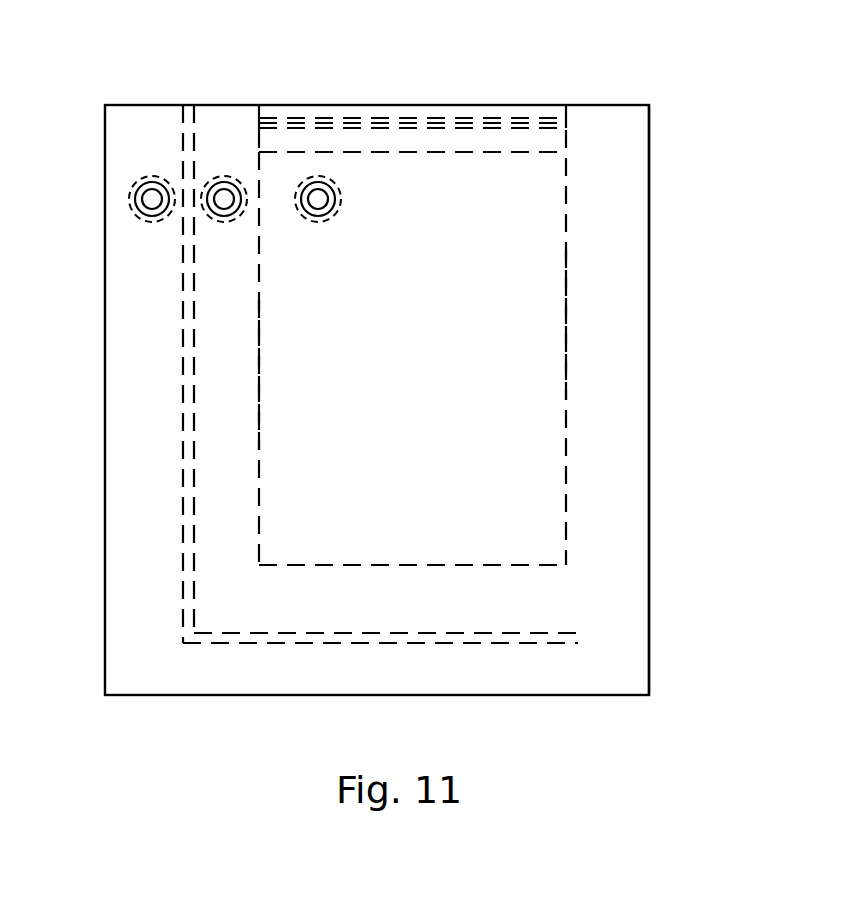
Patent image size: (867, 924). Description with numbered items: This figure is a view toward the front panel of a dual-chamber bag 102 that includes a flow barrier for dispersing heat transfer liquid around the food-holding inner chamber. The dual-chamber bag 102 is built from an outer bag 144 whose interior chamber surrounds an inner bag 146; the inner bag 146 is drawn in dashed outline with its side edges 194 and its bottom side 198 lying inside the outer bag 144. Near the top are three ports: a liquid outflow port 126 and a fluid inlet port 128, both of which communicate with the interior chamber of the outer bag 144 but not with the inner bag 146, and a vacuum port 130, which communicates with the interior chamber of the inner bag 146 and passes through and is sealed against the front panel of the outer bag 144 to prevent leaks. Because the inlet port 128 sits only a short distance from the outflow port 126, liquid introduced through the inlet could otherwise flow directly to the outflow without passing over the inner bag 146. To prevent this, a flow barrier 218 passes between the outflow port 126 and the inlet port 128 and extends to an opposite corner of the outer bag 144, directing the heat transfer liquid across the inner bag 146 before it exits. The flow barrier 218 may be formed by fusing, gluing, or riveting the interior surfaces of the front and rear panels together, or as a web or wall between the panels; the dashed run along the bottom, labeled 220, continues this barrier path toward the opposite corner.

The dual-chamber bag 102 is at (647, 38).
The liquid outflow port 126 is at (132, 199).
The fluid inlet port 128 is at (222, 218).
The vacuum port 130 is at (338, 199).
The outer bag 144 is at (649, 397).
The inner bag 146 is at (259, 468).
The side edges 194 is at (259, 375).
The bottom side 198 is at (439, 565).
The flow barrier 218 is at (183, 408).
The horizontal channel 220 is at (583, 633).